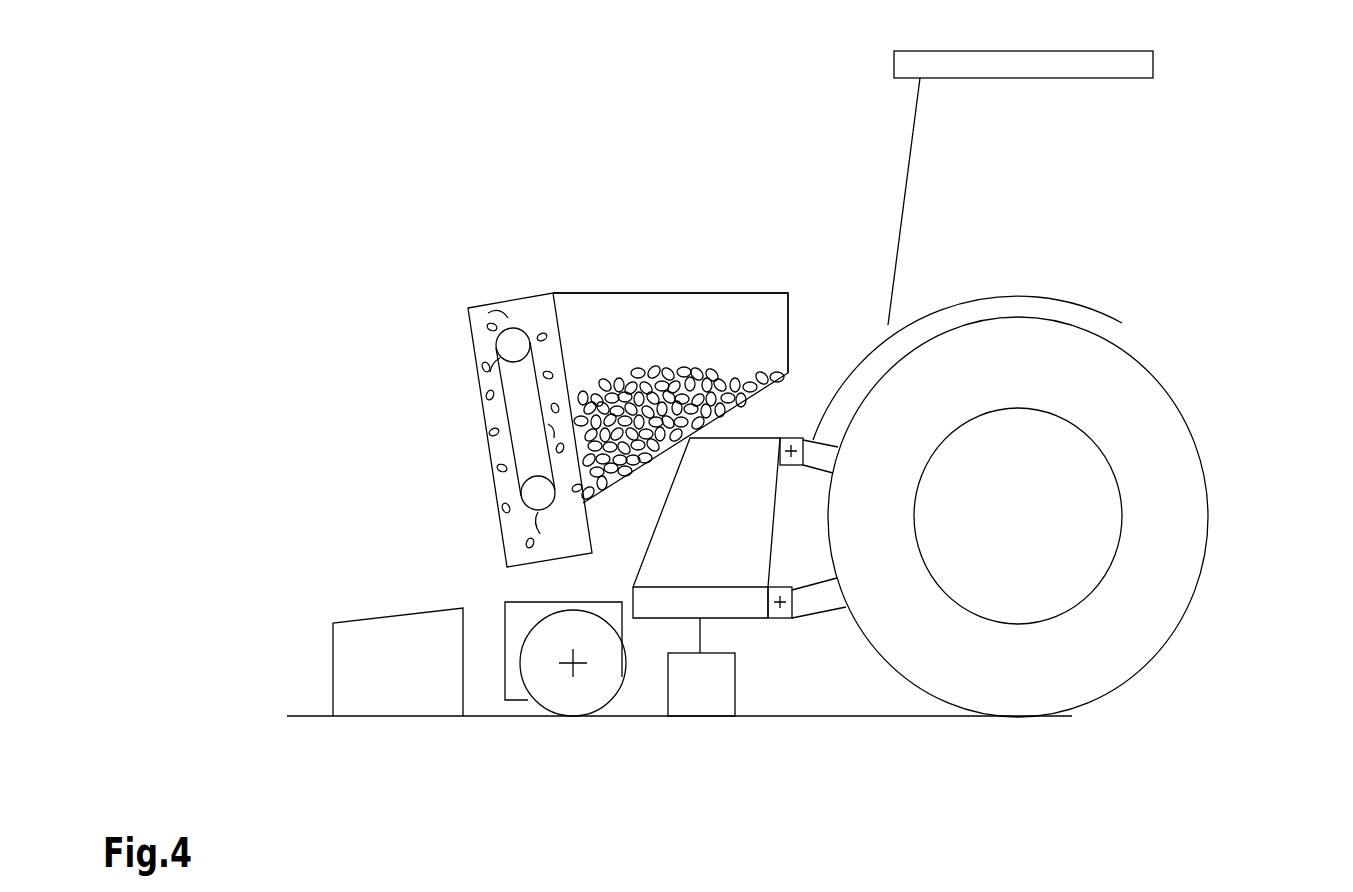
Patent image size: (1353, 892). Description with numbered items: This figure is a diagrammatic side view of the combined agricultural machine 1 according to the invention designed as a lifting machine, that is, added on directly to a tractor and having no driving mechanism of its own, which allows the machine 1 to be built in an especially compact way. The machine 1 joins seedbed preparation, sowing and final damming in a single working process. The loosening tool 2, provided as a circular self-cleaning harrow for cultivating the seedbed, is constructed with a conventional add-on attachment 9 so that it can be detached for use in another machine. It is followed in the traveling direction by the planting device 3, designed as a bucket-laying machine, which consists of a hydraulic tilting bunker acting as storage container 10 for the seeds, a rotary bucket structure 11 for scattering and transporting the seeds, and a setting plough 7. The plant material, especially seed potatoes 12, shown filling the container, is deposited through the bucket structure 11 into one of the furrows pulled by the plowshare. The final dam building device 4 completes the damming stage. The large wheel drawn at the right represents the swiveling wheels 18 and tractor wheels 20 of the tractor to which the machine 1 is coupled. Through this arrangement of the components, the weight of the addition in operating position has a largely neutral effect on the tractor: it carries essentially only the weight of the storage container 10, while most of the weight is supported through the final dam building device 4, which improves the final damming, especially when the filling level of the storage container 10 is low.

The combined agricultural machine 1 is at (619, 270).
The loosening tool 2 is at (715, 703).
The planting device 3 is at (473, 415).
The final dam building device 4 is at (410, 632).
The setting plough 7 is at (552, 668).
The add-on attachment 9 is at (752, 478).
The storage container 10 is at (643, 343).
The rotary bucket structure 11 is at (510, 357).
The seed potatoes 12 is at (680, 375).
The swiveling wheels 18 is at (1073, 395).
The tractor wheels 20 is at (1137, 595).